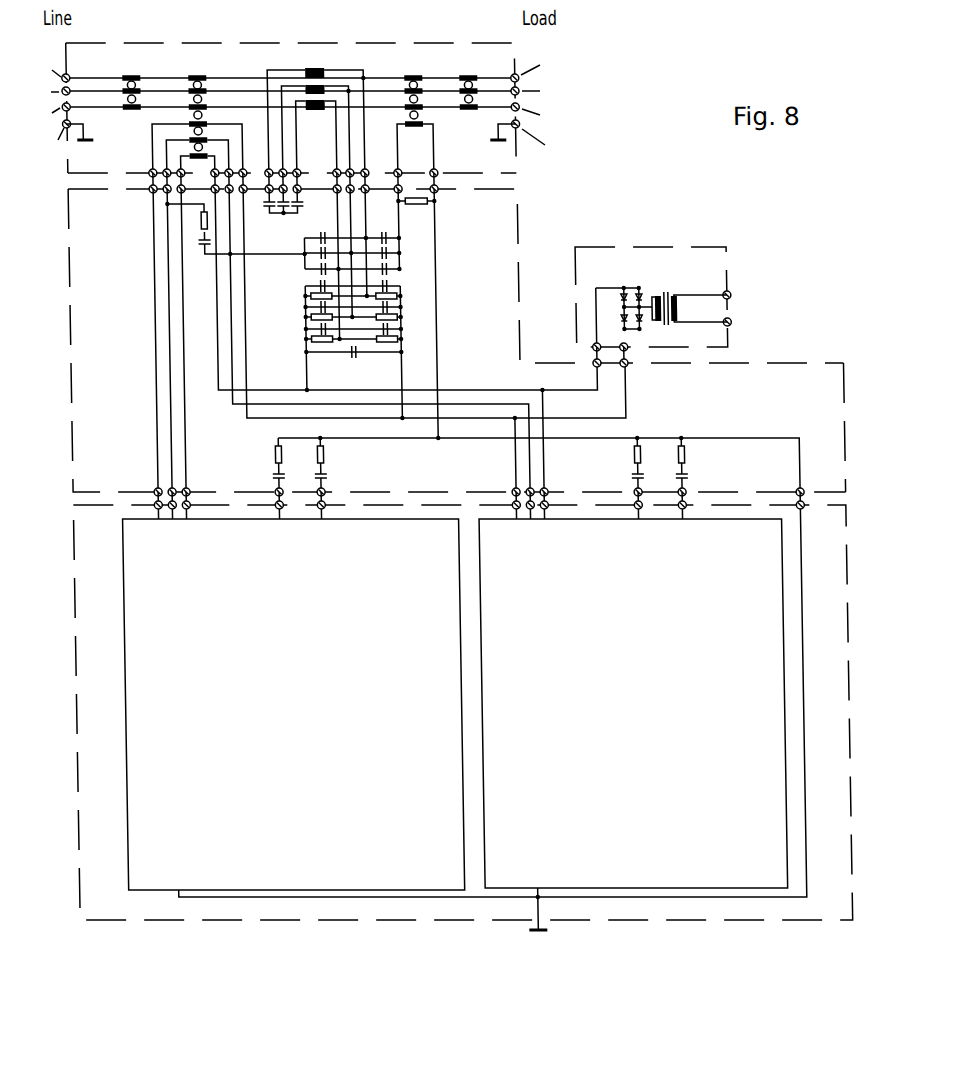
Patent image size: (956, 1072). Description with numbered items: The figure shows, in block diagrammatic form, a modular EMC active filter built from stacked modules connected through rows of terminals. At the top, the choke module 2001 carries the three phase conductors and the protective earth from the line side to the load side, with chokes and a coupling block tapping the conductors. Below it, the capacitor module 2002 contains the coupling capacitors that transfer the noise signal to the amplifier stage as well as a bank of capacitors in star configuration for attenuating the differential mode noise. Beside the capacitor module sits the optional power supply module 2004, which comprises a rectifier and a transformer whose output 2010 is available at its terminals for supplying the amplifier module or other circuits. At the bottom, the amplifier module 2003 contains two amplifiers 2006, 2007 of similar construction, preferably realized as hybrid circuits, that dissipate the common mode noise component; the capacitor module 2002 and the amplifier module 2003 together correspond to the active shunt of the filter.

The choke module 2001 is at (506, 55).
The capacitor module 2002 is at (490, 200).
The amplifier module 2003 is at (733, 909).
The power supply module 2004 is at (693, 254).
The transformer output 2010 is at (727, 308).
The amplifier 2006 is at (438, 880).
The amplifier 2007 is at (767, 882).